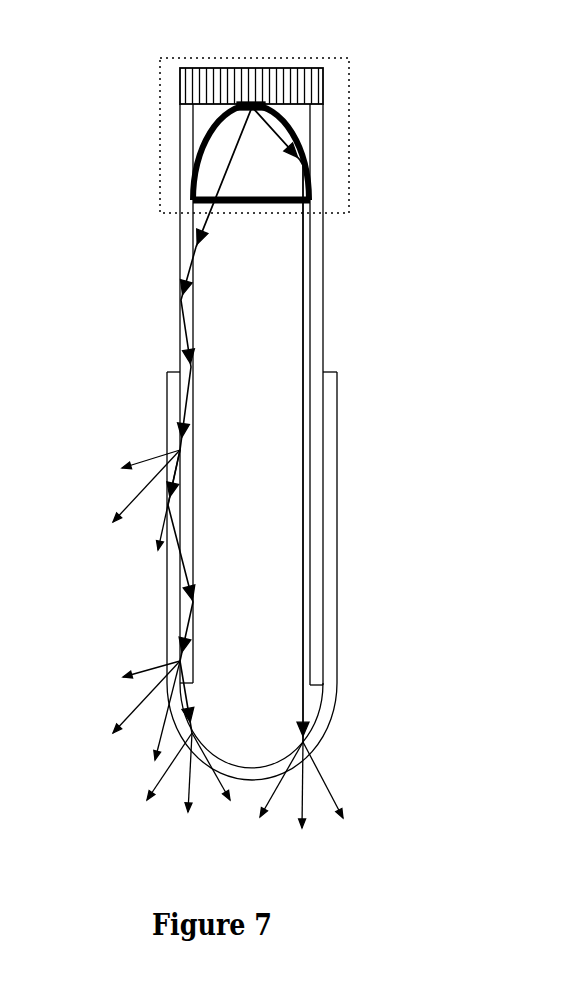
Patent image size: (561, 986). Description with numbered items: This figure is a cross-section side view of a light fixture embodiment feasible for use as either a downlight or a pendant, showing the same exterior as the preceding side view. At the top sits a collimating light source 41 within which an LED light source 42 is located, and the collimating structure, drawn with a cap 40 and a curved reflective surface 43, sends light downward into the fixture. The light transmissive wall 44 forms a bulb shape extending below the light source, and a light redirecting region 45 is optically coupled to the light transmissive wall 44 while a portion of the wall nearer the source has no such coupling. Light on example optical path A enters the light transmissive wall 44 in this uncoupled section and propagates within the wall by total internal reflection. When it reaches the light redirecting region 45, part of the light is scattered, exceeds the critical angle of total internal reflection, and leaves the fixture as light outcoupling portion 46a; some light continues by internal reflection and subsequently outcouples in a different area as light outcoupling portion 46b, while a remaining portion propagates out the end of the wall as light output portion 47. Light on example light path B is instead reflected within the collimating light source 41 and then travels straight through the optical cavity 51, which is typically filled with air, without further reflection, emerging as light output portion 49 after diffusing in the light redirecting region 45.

The light source cap / heat sink 40 is at (290, 75).
The collimating light source 41 is at (156, 135).
The LED light source 42 is at (251, 105).
The reflector 43 is at (298, 142).
The light transmissive wall 44 is at (188, 232).
The light redirecting region 45 is at (328, 410).
The light outcoupling portion 46a is at (139, 506).
The light outcoupling portion 46b is at (123, 711).
The light output portion 47 is at (188, 790).
The light output portion 49 is at (305, 802).
The optical cavity 51 is at (263, 317).
The example optical path A is at (222, 178).
The example light path B is at (284, 131).